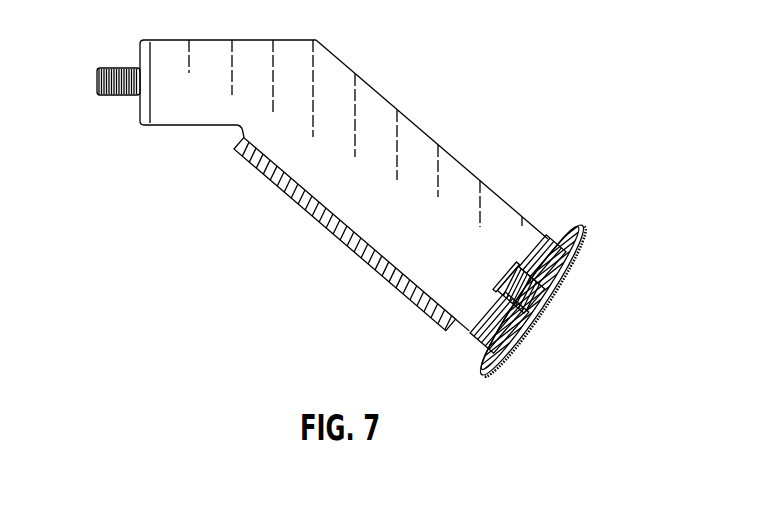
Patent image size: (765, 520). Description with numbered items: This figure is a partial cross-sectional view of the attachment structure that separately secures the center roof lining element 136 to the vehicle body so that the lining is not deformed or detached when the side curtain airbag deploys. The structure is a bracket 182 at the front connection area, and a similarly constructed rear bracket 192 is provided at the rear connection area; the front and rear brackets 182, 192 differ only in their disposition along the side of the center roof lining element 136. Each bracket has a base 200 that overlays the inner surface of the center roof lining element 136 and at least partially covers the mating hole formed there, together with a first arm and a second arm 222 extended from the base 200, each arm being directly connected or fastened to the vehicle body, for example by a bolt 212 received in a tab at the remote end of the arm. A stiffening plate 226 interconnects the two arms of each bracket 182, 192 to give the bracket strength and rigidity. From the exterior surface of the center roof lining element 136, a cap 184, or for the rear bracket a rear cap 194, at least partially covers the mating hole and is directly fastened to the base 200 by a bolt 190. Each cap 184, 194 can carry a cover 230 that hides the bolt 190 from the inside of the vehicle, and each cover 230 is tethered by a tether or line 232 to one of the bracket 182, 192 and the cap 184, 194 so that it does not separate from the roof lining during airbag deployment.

The bolt 212 is at (103, 67).
The second arm 222 is at (370, 97).
The stiffening plate 226 is at (338, 238).
The bracket 182 is at (406, 194).
The rear bracket 192 is at (406, 194).
The center roof lining element 136 is at (511, 260).
The base 200 is at (540, 247).
The bolt 190 is at (500, 280).
The cover 230 is at (541, 290).
The tether 232 is at (585, 228).
The cap 184 is at (590, 290).
The rear cap 194 is at (541, 290).